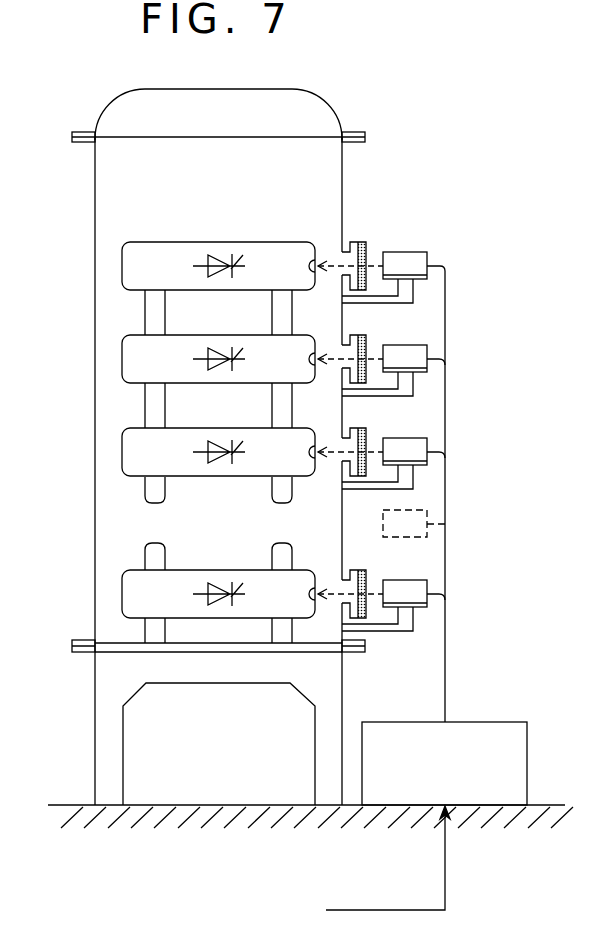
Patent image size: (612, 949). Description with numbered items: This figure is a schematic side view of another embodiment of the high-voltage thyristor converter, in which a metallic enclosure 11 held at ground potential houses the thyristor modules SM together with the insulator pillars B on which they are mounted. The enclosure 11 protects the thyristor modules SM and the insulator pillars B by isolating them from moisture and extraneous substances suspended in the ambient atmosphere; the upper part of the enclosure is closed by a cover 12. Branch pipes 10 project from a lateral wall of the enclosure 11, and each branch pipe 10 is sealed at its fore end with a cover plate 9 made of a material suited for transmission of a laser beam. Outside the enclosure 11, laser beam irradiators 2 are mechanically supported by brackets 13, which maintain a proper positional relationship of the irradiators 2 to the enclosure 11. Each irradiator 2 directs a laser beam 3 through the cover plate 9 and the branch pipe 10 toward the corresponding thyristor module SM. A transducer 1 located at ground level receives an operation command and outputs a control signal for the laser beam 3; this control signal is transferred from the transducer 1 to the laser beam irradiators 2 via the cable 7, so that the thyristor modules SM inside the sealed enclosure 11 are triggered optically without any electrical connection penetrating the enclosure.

The transducer 1 is at (483, 722).
The laser beam irradiator 2 is at (415, 257).
The laser beam 3 is at (338, 262).
The cable 7 is at (447, 491).
The cover plate 9 is at (371, 246).
The branch pipe 10 is at (350, 251).
The metallic enclosure 11 is at (95, 373).
The tank dome cover 12 is at (318, 146).
The bracket 13 is at (396, 307).
The thyristor module SM is at (197, 243).
The insulator pillar B is at (147, 309).